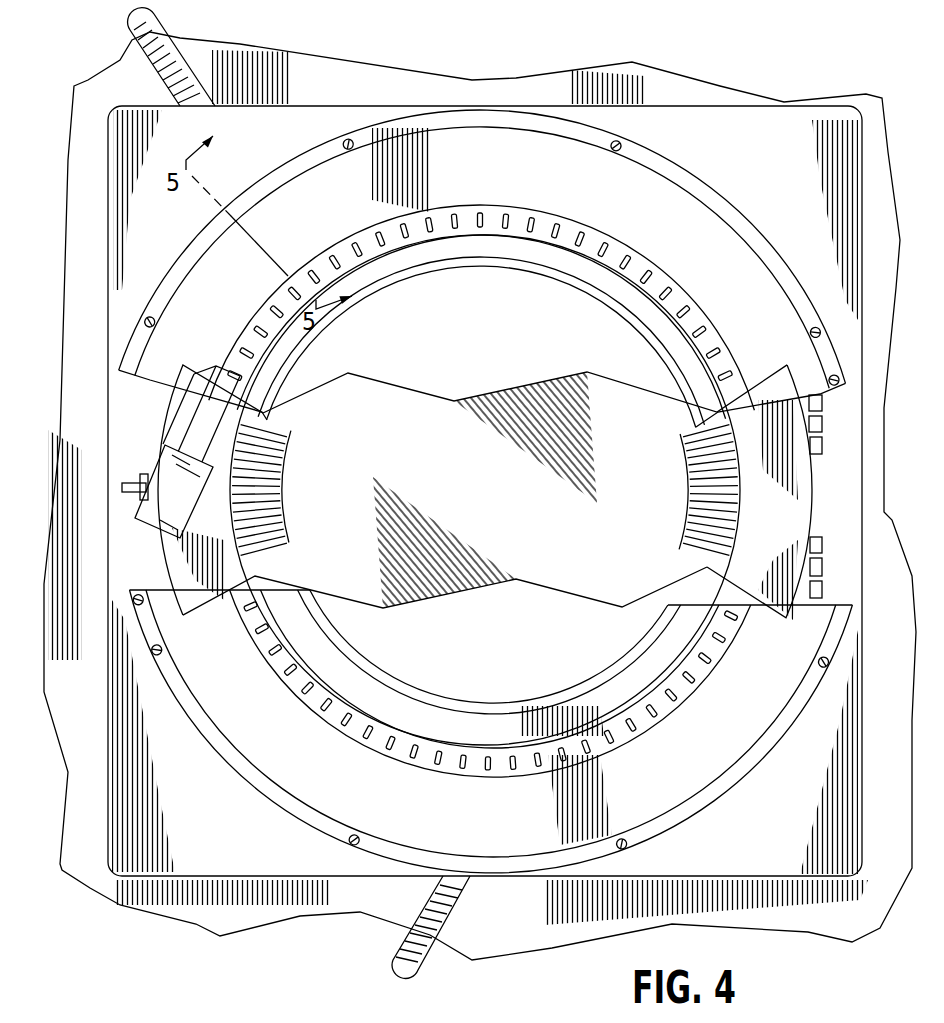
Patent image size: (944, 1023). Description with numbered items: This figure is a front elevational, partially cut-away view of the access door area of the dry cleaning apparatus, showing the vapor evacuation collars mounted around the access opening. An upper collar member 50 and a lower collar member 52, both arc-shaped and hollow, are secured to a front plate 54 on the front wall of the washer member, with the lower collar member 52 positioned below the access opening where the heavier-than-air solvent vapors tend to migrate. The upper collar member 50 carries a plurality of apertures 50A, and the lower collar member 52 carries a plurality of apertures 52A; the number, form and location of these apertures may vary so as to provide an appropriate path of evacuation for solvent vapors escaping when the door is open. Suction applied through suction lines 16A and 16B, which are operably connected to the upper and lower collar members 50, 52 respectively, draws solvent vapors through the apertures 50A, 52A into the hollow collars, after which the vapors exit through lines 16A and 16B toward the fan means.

The suction line 16A is at (132, 58).
The suction line 16B is at (396, 958).
The upper collar member 50 is at (489, 140).
The apertures 50A is at (534, 216).
The lower collar member 52 is at (260, 752).
The apertures 52A is at (434, 768).
The front plate 54 is at (744, 130).